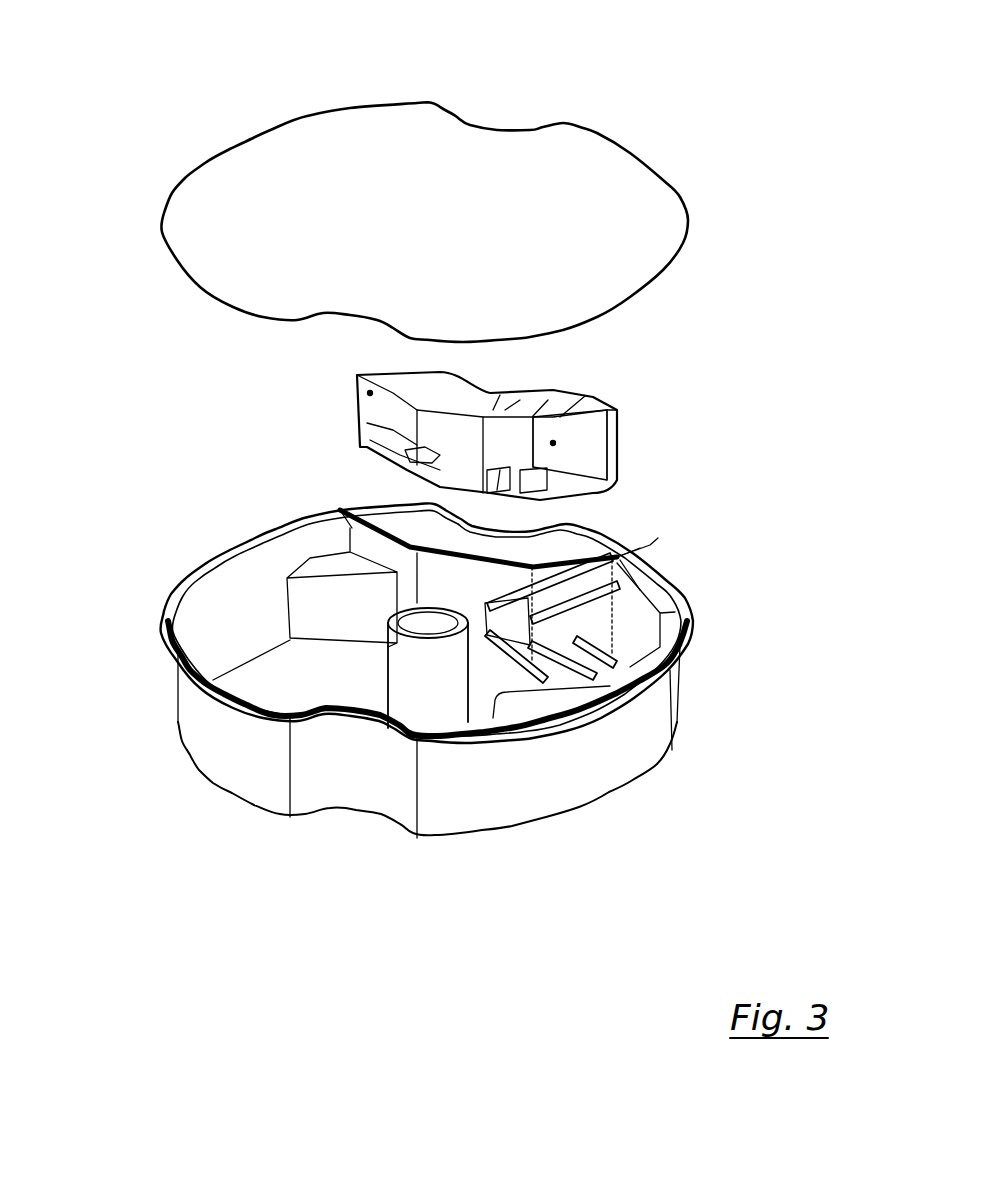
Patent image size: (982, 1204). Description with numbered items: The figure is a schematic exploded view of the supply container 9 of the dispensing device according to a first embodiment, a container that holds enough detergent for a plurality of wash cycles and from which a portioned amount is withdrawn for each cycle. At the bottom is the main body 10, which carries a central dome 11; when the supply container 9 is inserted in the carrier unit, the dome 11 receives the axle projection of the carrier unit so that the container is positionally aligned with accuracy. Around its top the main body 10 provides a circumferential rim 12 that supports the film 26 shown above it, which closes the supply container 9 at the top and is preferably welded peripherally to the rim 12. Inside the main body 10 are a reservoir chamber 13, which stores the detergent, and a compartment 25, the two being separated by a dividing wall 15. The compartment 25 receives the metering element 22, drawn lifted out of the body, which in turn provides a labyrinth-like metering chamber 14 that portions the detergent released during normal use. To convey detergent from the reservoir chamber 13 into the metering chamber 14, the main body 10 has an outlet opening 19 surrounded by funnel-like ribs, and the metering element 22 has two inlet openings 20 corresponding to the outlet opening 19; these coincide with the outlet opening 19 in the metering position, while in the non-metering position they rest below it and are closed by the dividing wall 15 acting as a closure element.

The supply container 9 is at (712, 368).
The main body 10 is at (350, 790).
The dome 11 is at (433, 657).
The circumferential rim 12 is at (217, 695).
The reservoir chamber 13 is at (228, 618).
The metering chamber 14 is at (580, 392).
The dividing wall 15 is at (443, 580).
The outlet opening 19 is at (557, 622).
The inlet openings 20 is at (540, 480).
The metering element 22 is at (587, 438).
The compartment 25 is at (577, 547).
The film 26 is at (330, 202).